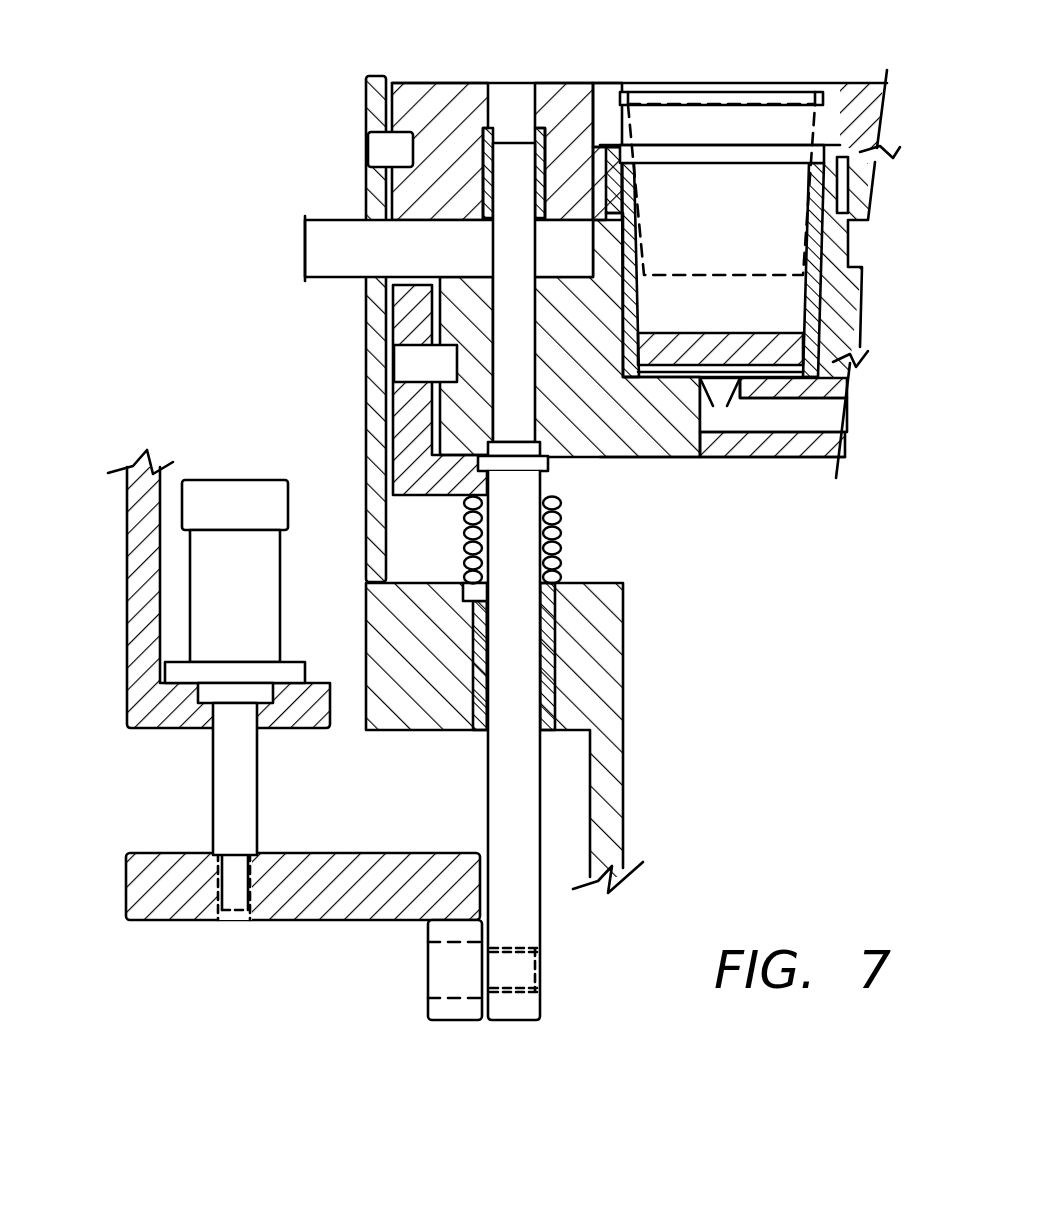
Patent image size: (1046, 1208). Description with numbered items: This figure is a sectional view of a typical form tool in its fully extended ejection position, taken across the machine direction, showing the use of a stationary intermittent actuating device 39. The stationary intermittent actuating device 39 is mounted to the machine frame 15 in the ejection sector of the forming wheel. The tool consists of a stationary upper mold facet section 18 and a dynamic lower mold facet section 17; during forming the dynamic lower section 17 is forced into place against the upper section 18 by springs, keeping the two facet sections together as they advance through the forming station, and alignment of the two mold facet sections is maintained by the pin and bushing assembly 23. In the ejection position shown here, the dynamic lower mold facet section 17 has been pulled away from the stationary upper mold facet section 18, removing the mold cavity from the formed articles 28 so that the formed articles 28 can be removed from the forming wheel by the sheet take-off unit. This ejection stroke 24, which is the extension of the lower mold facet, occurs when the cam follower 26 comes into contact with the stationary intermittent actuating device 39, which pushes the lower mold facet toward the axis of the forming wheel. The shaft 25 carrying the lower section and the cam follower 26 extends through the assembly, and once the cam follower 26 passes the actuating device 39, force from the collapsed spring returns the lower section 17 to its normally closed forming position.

The machine frame 15 is at (127, 553).
The dynamic lower mold facet section 17 is at (676, 458).
The stationary upper mold facet section 18 is at (405, 82).
The pin and bushing assembly 23 is at (513, 128).
The ejection stroke 24 is at (305, 246).
The shaft 25 is at (487, 782).
The cam follower 26 is at (428, 958).
The formed articles 28 is at (703, 105).
The stationary intermittent actuating device 39 is at (126, 879).